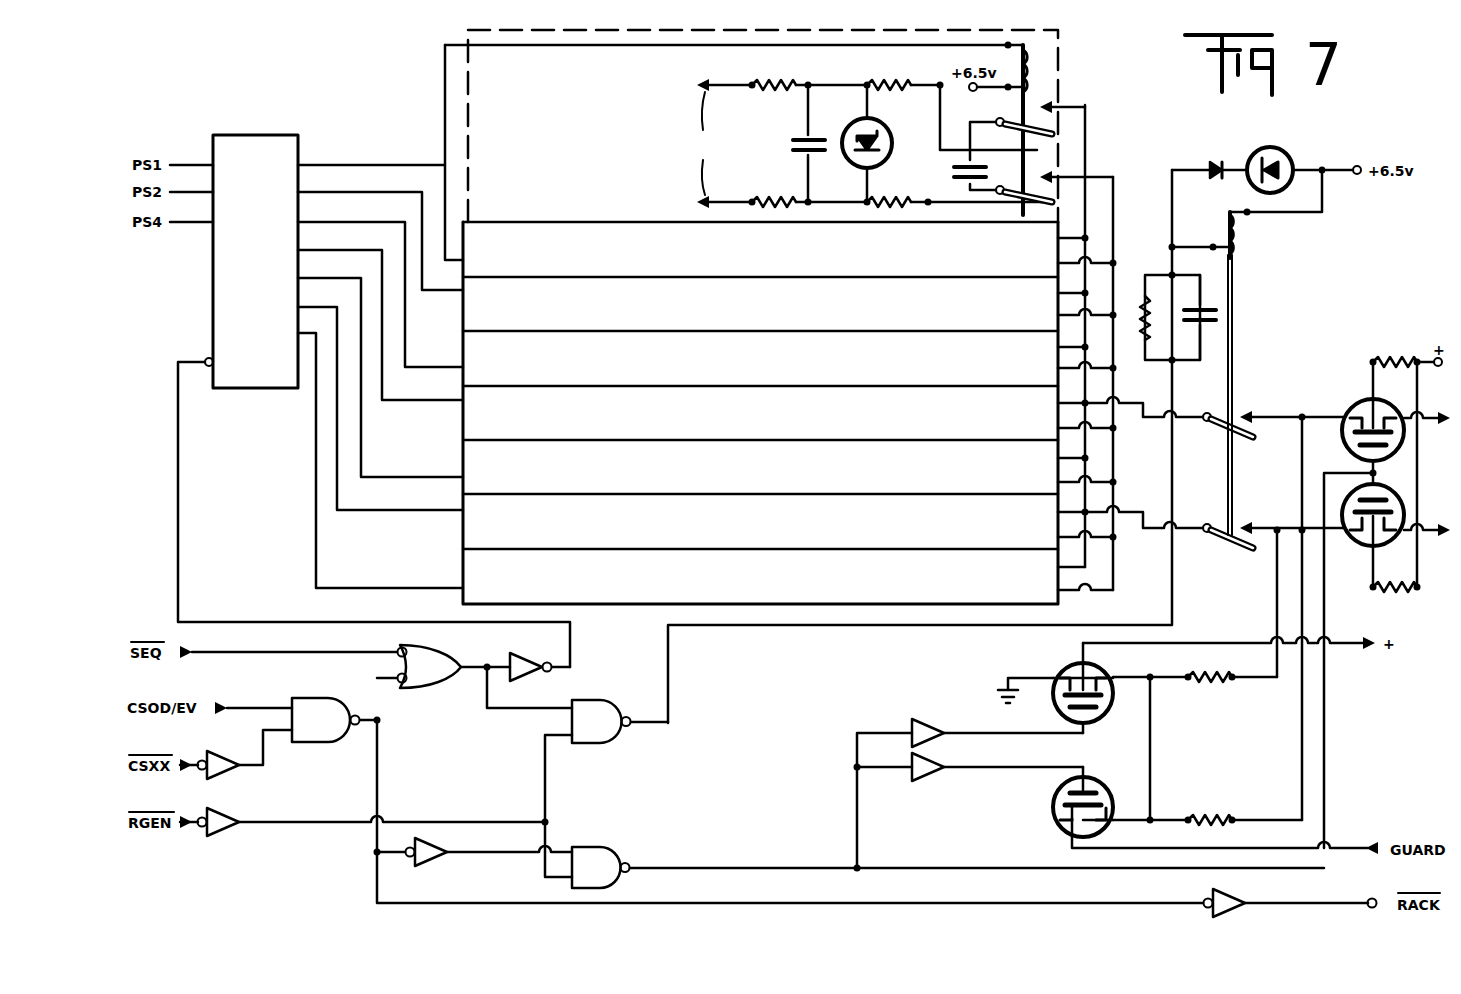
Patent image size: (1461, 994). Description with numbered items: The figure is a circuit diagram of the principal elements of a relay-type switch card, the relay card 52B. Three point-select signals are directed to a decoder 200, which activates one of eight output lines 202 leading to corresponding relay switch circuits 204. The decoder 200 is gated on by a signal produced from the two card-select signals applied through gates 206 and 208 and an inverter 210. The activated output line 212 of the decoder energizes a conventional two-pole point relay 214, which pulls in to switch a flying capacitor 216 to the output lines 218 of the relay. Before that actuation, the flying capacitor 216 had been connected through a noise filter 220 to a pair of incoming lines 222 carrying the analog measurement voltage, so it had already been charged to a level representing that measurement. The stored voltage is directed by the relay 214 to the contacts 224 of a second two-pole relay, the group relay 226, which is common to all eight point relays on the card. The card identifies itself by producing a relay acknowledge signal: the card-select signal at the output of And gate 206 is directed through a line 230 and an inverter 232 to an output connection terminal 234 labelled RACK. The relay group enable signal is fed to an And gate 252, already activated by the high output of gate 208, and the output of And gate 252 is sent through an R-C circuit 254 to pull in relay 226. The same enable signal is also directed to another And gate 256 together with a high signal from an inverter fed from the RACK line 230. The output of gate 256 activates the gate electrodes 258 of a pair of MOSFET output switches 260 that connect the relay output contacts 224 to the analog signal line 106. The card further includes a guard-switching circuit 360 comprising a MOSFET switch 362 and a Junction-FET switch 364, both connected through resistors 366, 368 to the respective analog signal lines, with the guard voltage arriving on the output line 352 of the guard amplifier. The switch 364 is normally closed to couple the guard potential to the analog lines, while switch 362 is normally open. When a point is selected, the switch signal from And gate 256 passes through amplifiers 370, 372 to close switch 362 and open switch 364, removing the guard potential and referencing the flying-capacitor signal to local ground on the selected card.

The relay card 52B is at (275, 75).
The decoder 200 is at (272, 324).
The output lines 202 is at (392, 134).
The relay switch circuits 204 is at (790, 262).
The And gate 206 is at (305, 745).
The gate 208 is at (415, 692).
The inverter 210 is at (538, 654).
The activated output line 212 is at (505, 47).
The point relay 214 is at (1130, 49).
The flying capacitor 216 is at (955, 170).
The output lines of the relay 218 is at (1090, 176).
The noise filter 220 is at (788, 132).
The incoming lines 222 is at (714, 143).
The contacts 224 is at (1240, 520).
The group relay 226 is at (1322, 244).
The line 230 is at (452, 901).
The inverter 232 is at (1236, 897).
The output connection terminal 234 is at (1375, 898).
The And gate 252 is at (598, 746).
The R-C circuit 254 is at (1192, 304).
The And gate 256 is at (598, 850).
The gate electrodes 258 is at (1368, 472).
The MOSFET output switches 260 is at (1348, 404).
The analog signal line 106 is at (1440, 518).
The output line of the guard amplifier 352 is at (1340, 846).
The guard-switching circuit 360 is at (960, 675).
The MOSFET switch 362 is at (1062, 665).
The Junction-FET switch 364 is at (1058, 812).
The resistor 366 is at (1212, 684).
The resistor 368 is at (1212, 814).
The amplifier 370 is at (925, 722).
The amplifier 372 is at (925, 778).